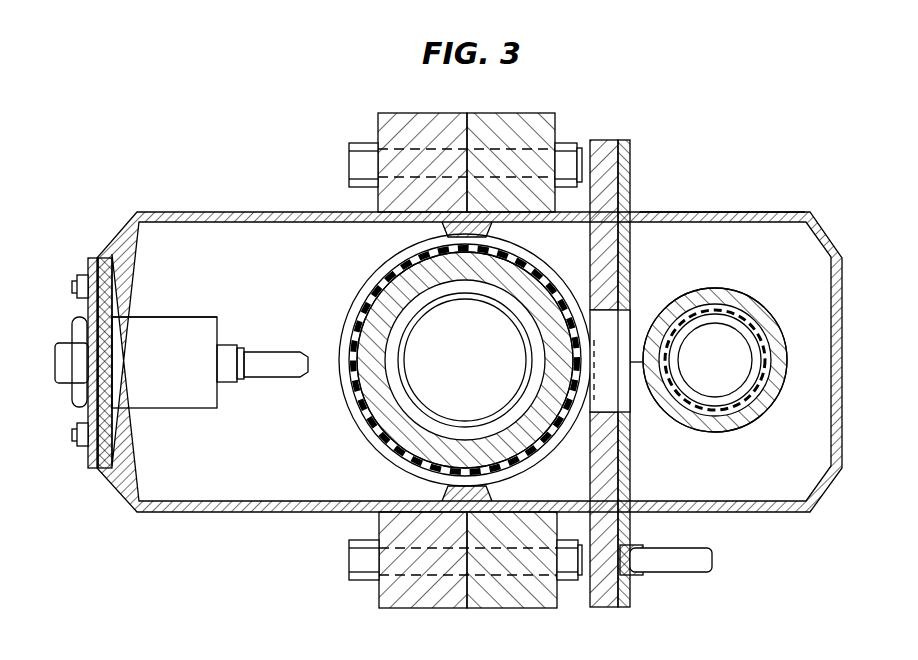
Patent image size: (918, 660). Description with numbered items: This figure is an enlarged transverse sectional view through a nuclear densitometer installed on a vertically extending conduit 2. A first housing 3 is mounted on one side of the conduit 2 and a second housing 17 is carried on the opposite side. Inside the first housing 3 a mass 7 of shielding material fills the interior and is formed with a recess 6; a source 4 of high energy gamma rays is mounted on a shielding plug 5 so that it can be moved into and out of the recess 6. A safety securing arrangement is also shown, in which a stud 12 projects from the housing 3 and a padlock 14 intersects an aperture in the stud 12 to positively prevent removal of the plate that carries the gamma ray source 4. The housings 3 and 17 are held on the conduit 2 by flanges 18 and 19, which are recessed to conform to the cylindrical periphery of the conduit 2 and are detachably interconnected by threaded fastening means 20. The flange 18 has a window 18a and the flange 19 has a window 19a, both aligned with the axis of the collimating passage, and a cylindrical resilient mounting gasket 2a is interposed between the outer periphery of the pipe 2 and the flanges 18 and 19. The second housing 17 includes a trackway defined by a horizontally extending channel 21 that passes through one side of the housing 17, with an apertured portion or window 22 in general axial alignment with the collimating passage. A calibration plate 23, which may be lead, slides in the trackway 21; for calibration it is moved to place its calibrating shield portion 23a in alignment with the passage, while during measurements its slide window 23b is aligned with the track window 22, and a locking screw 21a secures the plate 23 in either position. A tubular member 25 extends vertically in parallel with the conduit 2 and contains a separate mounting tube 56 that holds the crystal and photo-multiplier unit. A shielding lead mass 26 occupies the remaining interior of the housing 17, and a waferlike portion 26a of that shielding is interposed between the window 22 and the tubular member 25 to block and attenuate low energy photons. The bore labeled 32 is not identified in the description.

The conduit 2 is at (408, 428).
The resilient mounting gasket 2a is at (357, 310).
The first housing 3 is at (215, 212).
The source 4 is at (258, 368).
The shielding plug 5 is at (180, 408).
The recess 6 is at (180, 317).
The mass of shielding material 7 is at (637, 368).
The stud 12 is at (65, 368).
The padlock 14 is at (78, 330).
The second housing 17 is at (702, 212).
The flange 18 is at (418, 125).
The window 18a is at (352, 405).
The flange 19 is at (507, 125).
The window 19a is at (557, 275).
The threaded fastening means 20 is at (582, 140).
The channel 21 is at (630, 490).
The locking screw 21a is at (720, 572).
The window 22 is at (622, 398).
The calibration plate 23 is at (603, 470).
The calibrating shield portion 23a is at (612, 258).
The slide window 23b is at (510, 361).
The tubular member 25 is at (710, 424).
The shielding lead mass 26 is at (766, 265).
The waferlike portion 26a is at (640, 325).
The bore 32 is at (482, 351).
The mounting tube 56 is at (750, 397).